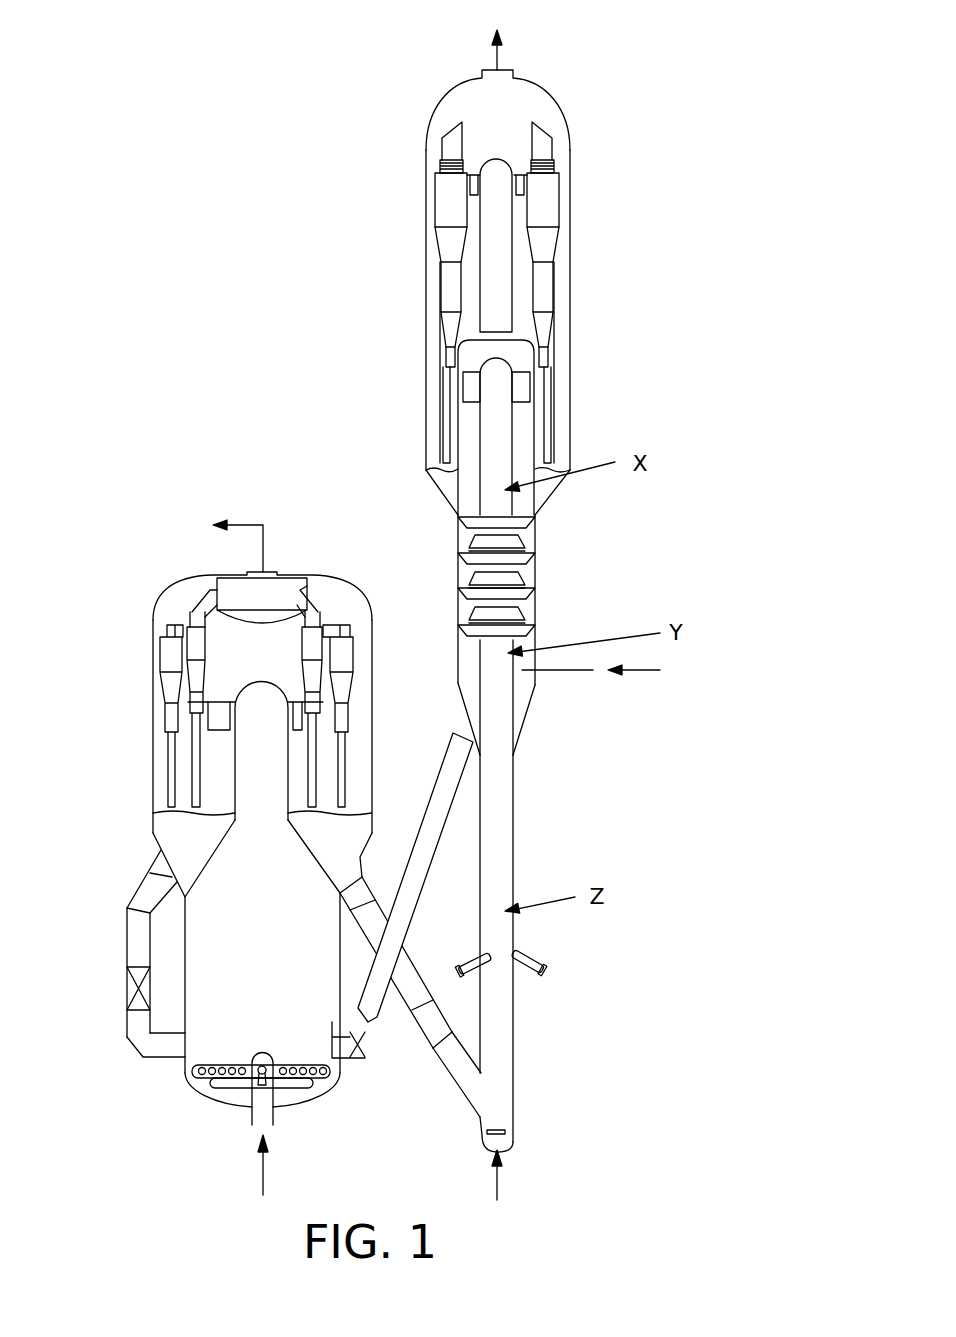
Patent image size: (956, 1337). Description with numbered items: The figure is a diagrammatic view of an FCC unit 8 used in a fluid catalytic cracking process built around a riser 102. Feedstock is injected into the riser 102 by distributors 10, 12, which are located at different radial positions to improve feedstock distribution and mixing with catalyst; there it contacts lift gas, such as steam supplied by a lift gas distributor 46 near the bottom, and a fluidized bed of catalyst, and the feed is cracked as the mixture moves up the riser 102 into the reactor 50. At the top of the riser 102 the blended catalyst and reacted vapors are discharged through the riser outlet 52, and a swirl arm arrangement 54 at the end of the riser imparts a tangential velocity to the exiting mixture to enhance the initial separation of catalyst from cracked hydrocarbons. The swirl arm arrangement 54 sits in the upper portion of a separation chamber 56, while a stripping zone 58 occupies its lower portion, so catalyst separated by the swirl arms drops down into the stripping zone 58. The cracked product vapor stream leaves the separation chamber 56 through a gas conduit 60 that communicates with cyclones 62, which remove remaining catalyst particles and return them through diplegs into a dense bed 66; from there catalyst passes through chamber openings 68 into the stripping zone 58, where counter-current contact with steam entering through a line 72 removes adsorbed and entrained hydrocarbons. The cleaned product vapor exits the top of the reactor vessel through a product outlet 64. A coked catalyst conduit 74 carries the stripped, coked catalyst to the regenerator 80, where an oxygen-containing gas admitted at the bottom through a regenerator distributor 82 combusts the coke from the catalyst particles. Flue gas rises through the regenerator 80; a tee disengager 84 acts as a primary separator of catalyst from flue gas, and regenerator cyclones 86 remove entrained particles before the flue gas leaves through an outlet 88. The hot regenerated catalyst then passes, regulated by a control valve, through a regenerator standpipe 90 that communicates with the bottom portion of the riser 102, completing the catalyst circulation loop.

The FCC unit 8 is at (356, 390).
The distributor 10 is at (478, 966).
The distributor 12 is at (530, 970).
The lift gas distributor 46 is at (485, 1132).
The reactor 50 is at (571, 258).
The riser outlet 52 is at (530, 382).
The swirl arm arrangement 54 is at (472, 368).
The separation chamber 56 is at (530, 420).
The stripping zone 58 is at (538, 546).
The gas conduit 60 is at (507, 290).
The cyclones 62 is at (448, 204).
The product outlet 64 is at (501, 60).
The dense bed 66 is at (427, 470).
The chamber openings 68 is at (453, 491).
The line 72 is at (558, 676).
The coked catalyst conduit 74 is at (434, 789).
The regenerator 80 is at (217, 923).
The regenerator distributor 82 is at (251, 1120).
The tee disengager 84 is at (215, 708).
The regenerator cyclones 86 is at (175, 654).
The outlet 88 is at (275, 568).
The regenerator standpipe 90 is at (414, 1006).
The riser 102 is at (516, 850).